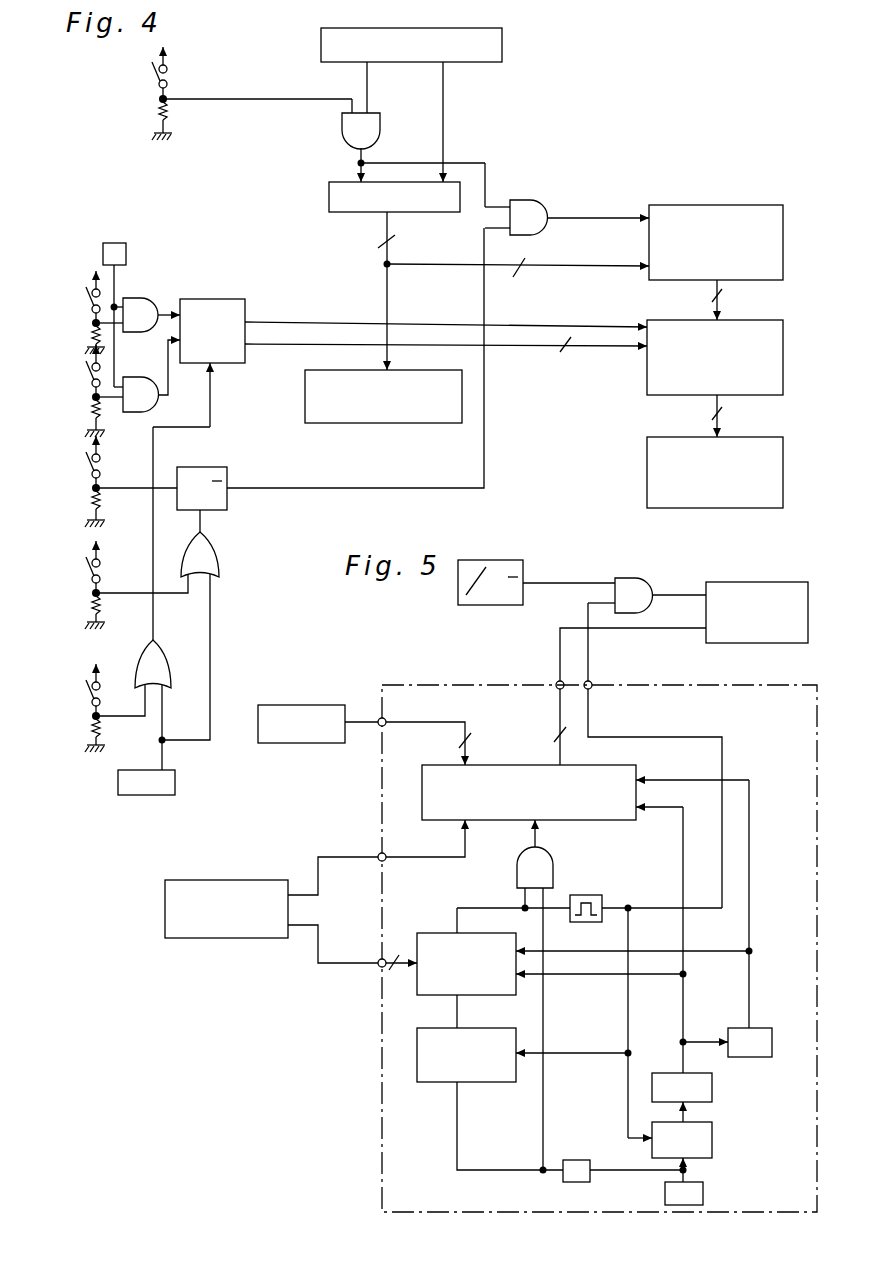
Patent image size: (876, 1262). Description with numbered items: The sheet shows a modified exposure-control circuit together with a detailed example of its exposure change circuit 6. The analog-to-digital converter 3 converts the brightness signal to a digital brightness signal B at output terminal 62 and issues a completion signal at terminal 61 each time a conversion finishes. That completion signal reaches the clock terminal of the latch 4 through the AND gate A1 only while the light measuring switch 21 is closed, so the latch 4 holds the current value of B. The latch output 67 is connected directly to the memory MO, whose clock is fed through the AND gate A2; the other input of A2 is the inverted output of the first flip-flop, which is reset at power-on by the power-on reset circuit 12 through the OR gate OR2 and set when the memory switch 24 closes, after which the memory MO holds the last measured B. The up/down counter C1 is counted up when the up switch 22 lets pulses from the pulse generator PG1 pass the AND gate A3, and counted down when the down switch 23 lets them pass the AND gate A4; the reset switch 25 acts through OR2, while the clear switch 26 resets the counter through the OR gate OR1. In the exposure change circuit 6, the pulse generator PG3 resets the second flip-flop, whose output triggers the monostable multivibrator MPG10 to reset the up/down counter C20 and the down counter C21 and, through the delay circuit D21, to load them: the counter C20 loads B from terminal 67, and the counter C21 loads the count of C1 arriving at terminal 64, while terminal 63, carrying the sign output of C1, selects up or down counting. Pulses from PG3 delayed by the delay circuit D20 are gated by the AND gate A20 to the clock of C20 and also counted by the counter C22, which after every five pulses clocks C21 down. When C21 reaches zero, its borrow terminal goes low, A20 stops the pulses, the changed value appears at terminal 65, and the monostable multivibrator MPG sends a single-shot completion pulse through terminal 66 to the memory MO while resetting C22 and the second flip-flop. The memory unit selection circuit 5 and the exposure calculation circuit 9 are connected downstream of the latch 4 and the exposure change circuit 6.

In FIG. 4, the analog-to-digital converter 3 is at (502, 45).
In FIG. 4, the latch 4 is at (433, 212).
In FIG. 5, the latch 4 is at (318, 743).
In FIG. 4, the memory unit selection circuit 5 is at (405, 423).
In FIG. 4, the exposure change circuit 6 is at (760, 320).
In FIG. 5, the exposure change circuit 6 is at (382, 1062).
In FIG. 4, the exposure calculation circuit 9 is at (760, 437).
In FIG. 4, the power-on reset circuit 12 is at (118, 787).
In FIG. 4, the light measuring switch 21 is at (152, 80).
In FIG. 4, the up switch 22 is at (89, 298).
In FIG. 4, the down switch 23 is at (89, 386).
In FIG. 4, the memory switch 24 is at (89, 476).
In FIG. 4, the reset switch 25 is at (89, 580).
In FIG. 4, the clear switch 26 is at (89, 703).
In FIG. 4, the output terminal 61 is at (383, 87).
In FIG. 4, the output terminal 62 is at (461, 122).
In FIG. 5, the terminal 63 is at (378, 855).
In FIG. 5, the terminal 64 is at (378, 960).
In FIG. 5, the terminal 65 is at (556, 683).
In FIG. 5, the terminal 66 is at (593, 683).
In FIG. 4, the output of the latch 67 is at (502, 289).
In FIG. 5, the output of the latch 67 is at (382, 718).
In FIG. 4, the AND gate A1 is at (380, 124).
In FIG. 4, the AND gate A2 is at (535, 200).
In FIG. 5, the AND gate A2 is at (630, 578).
In FIG. 4, the AND gate A3 is at (147, 298).
In FIG. 4, the AND gate A4 is at (140, 377).
In FIG. 5, the AND gate A20 is at (553, 860).
In FIG. 4, the up/down counter C1 is at (218, 299).
In FIG. 5, the up/down counter C1 is at (258, 880).
In FIG. 5, the up/down counter C20 is at (510, 765).
In FIG. 5, the down counter C21 is at (436, 933).
In FIG. 5, the counter C22 is at (440, 1082).
In FIG. 5, the delay circuit D20 is at (575, 1160).
In FIG. 5, the delay circuit D21 is at (765, 1028).
In FIG. 4, the memory MO is at (737, 205).
In FIG. 5, the memory MO is at (752, 582).
In FIG. 5, the monostable multivibrator MPG is at (585, 895).
In FIG. 5, the monostable multivibrator MPG10 is at (622, 954).
In FIG. 4, the OR gate OR1 is at (170, 665).
In FIG. 4, the OR gate OR2 is at (219, 557).
In FIG. 4, the pulse generator PG1 is at (120, 243).
In FIG. 5, the pulse generator PG3 is at (703, 1195).